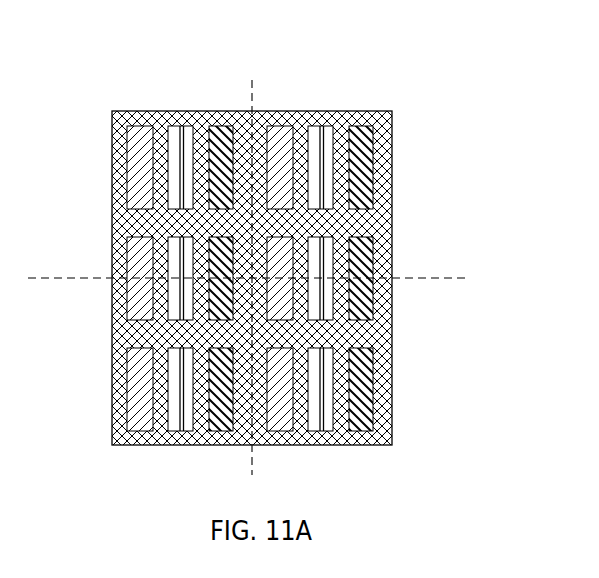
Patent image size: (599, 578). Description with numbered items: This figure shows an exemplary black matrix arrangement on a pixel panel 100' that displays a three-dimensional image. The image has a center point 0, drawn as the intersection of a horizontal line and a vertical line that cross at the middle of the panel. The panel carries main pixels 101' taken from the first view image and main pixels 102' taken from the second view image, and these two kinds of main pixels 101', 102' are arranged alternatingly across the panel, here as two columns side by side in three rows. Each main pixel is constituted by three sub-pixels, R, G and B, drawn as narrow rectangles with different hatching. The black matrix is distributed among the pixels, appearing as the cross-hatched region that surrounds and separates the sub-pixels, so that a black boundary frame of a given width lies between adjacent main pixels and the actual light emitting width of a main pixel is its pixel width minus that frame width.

The pixel panel 100' is at (277, 268).
The main pixels from the first view image 101' is at (179, 247).
The main pixels from the second view image 102' is at (318, 248).
The center point 0 is at (257, 270).